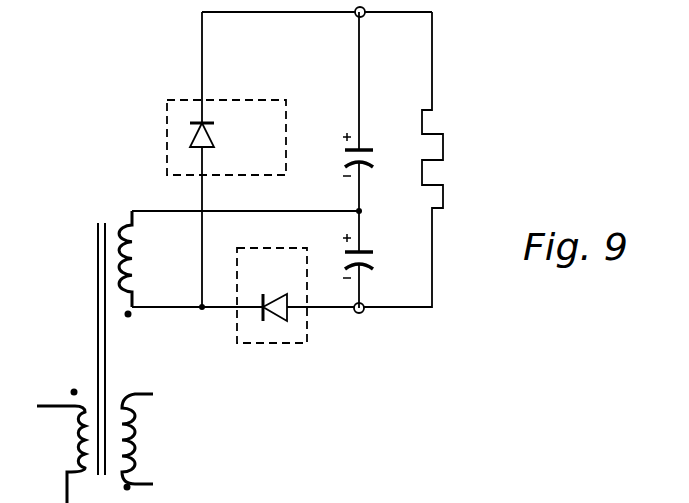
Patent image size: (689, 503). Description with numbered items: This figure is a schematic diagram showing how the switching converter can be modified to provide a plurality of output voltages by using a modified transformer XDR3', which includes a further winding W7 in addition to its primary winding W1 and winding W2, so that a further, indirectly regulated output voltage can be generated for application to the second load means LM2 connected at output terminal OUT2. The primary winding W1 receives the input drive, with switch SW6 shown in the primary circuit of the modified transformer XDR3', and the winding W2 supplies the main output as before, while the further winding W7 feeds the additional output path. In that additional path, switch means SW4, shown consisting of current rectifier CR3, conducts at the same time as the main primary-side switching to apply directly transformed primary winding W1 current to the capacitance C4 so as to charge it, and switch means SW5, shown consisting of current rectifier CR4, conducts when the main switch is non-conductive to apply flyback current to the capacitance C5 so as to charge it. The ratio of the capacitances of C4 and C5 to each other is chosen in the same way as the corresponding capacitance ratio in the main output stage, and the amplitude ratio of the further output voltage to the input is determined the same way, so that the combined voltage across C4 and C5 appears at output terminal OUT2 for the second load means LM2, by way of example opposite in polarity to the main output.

The output terminal OUT2 is at (355, 15).
The switch means SW4 is at (247, 100).
The current rectifier CR3 is at (226, 136).
The capacitance C4 is at (371, 111).
The capacitance C5 is at (372, 259).
The second load means LM2 is at (441, 171).
The switch means SW5 is at (276, 250).
The current rectifier CR4 is at (267, 291).
The modified transformer XDR3' is at (97, 324).
The further winding W7 is at (143, 258).
The primary winding W1 is at (59, 444).
The winding W2 is at (145, 437).
The switch SW6 is at (539, 486).